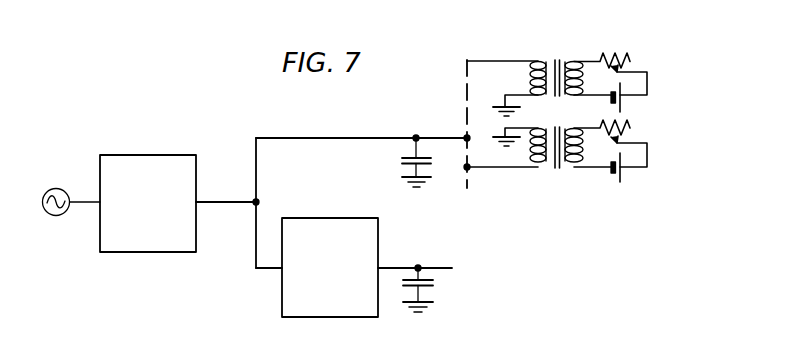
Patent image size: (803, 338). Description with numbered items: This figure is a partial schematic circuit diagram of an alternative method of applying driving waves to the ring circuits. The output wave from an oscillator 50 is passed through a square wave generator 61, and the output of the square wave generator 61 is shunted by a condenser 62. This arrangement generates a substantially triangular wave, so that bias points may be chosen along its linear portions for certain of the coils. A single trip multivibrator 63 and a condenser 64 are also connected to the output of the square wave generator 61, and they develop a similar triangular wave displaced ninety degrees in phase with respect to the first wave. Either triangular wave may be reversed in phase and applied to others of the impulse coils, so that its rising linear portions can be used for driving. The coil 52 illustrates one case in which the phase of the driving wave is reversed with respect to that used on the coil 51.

The oscillator 50 is at (58, 211).
The coil 51 is at (532, 77).
The coil 52 is at (532, 143).
The square wave generator 61 is at (150, 240).
The condenser 62 is at (398, 160).
The single trip multivibrator 63 is at (290, 295).
The condenser 64 is at (434, 283).